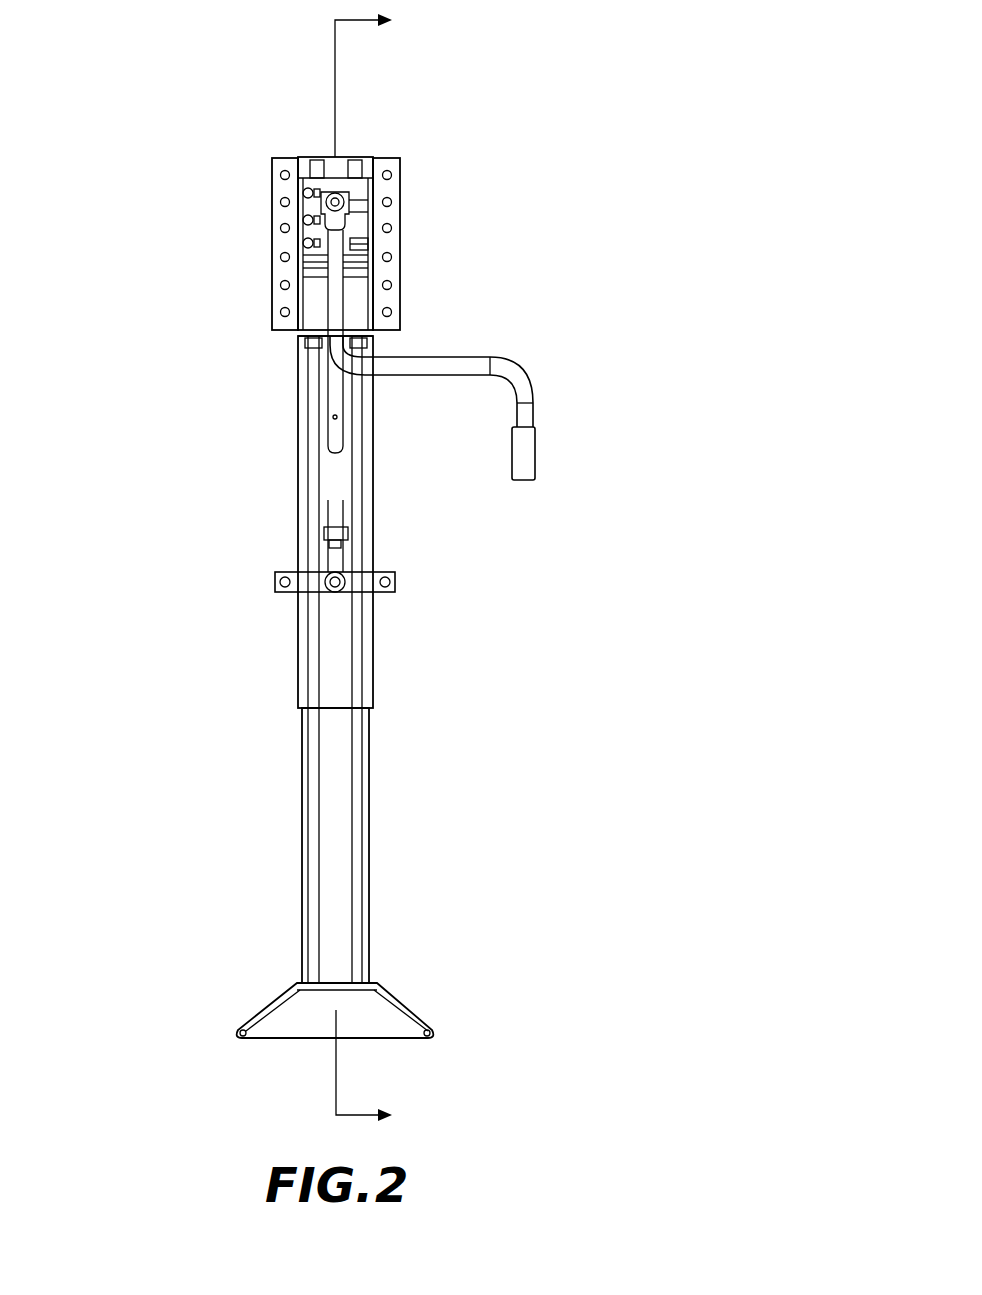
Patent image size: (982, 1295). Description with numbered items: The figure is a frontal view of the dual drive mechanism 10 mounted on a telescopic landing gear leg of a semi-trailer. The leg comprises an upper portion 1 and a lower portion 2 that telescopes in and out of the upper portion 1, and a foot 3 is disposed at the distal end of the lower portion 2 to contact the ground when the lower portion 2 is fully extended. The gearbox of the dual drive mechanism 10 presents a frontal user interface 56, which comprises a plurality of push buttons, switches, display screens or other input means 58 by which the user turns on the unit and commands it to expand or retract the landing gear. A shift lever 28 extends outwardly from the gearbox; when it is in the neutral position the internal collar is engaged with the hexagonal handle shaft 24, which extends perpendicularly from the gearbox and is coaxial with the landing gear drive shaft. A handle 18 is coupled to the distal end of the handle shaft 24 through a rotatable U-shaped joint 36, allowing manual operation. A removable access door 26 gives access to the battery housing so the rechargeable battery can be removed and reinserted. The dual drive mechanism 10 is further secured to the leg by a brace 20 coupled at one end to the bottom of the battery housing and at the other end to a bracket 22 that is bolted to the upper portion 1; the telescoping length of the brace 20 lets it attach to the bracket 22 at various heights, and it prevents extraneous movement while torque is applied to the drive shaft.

The dual drive mechanism 10 is at (658, 245).
The upper portion 1 is at (360, 640).
The lower portion 2 is at (362, 803).
The foot 3 is at (400, 1007).
The handle 18 is at (519, 381).
The brace 20 is at (335, 435).
The bracket 22 is at (298, 590).
The handle shaft 24 is at (337, 200).
The removable access door 26 is at (317, 303).
The shift lever 28 is at (392, 201).
The rotatable U-shaped joint 36 is at (352, 214).
The user interface 56 is at (323, 185).
The input means 58 is at (303, 242).